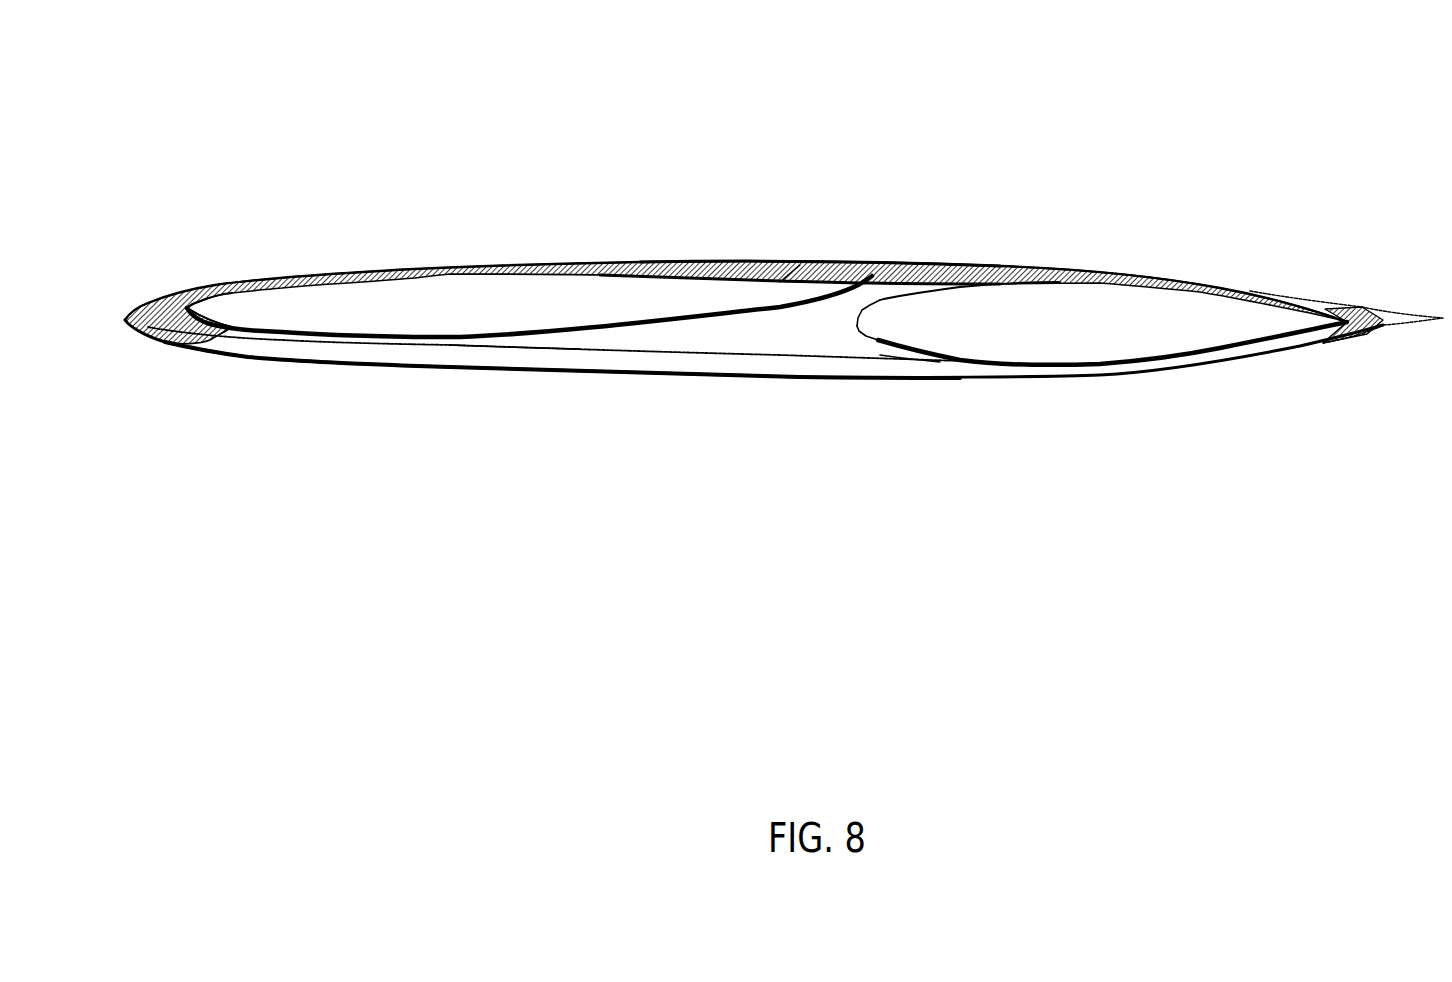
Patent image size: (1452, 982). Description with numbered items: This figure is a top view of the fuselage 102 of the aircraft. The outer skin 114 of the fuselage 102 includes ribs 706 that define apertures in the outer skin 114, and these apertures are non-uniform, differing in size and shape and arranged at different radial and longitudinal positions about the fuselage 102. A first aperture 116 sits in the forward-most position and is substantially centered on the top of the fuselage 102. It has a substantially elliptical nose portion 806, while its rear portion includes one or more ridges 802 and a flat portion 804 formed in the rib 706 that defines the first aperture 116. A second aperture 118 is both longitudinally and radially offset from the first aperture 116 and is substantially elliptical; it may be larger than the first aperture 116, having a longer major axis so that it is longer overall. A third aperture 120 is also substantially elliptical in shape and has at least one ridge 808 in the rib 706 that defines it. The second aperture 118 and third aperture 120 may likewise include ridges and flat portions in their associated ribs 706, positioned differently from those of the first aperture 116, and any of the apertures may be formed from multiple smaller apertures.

The fuselage 102 is at (1025, 183).
The outer skin 114 is at (733, 333).
The first aperture 116 is at (1135, 336).
The second aperture 118 is at (460, 360).
The third aperture 120 is at (416, 280).
The rib 706 is at (875, 295).
The ridge 802 is at (878, 340).
The flat portion 804 is at (857, 327).
The elliptical nose portion 806 is at (1353, 308).
The ridge 808 is at (282, 332).